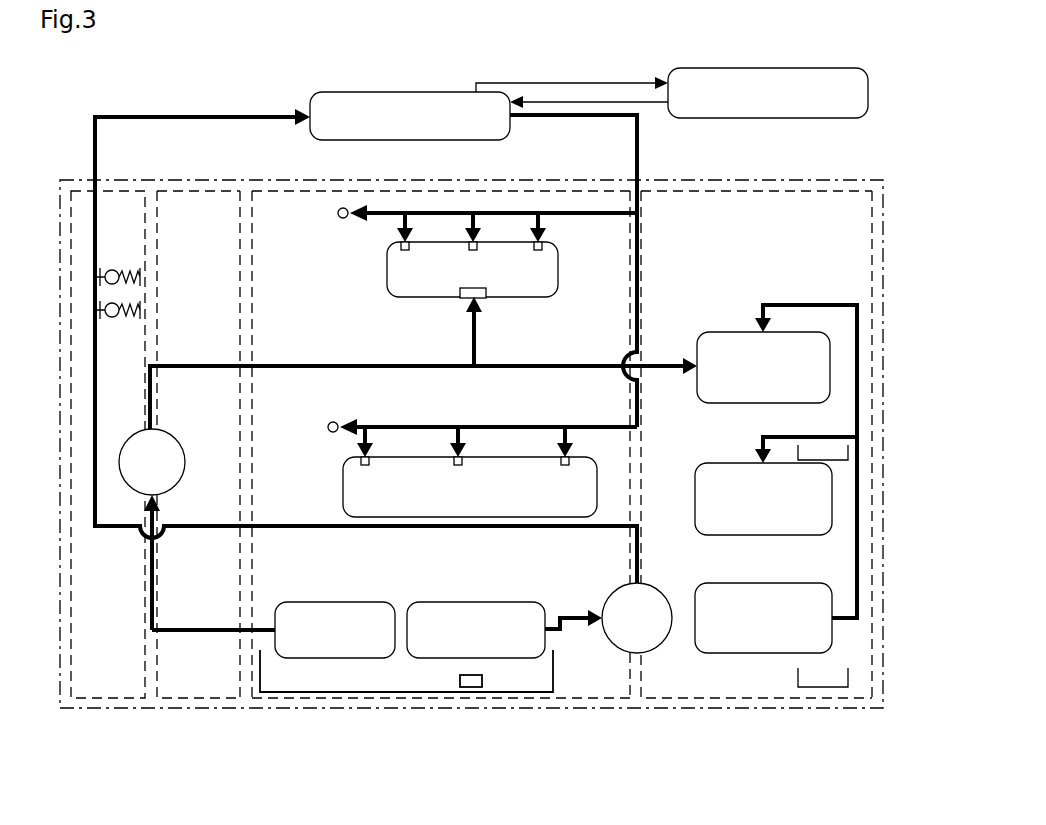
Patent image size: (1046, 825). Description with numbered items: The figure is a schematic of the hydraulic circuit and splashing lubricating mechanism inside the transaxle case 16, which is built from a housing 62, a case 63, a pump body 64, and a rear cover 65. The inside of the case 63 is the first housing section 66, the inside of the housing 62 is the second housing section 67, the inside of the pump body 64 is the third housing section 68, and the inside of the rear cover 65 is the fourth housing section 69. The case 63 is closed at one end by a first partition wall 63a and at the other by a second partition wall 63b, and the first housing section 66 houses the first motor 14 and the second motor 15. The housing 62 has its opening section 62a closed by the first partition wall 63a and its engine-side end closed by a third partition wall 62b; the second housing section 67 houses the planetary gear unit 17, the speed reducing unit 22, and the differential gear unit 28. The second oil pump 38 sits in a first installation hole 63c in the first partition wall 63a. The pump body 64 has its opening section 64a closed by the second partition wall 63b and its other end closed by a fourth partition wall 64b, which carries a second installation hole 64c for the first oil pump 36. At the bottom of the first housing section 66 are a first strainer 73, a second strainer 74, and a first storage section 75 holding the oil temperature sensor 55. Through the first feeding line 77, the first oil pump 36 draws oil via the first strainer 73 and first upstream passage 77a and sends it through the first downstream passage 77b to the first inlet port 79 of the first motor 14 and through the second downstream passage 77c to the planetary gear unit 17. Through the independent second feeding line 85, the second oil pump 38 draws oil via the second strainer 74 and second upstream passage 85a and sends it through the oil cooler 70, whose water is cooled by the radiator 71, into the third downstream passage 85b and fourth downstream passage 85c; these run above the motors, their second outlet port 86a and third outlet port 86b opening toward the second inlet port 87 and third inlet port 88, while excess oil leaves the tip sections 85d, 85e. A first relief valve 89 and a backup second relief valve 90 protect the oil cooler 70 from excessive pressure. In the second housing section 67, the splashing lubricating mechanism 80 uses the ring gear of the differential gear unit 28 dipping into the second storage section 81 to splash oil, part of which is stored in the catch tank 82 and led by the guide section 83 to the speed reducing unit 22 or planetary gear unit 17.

The first motor 14 is at (552, 276).
The second motor 15 is at (345, 492).
The transaxle case 16 is at (826, 174).
The planetary gear unit 17 is at (741, 330).
The speed reducing unit 22 is at (740, 462).
The differential gear unit 28 is at (775, 582).
The first oil pump 36 is at (127, 478).
The second oil pump 38 is at (658, 587).
The oil temperature sensor 55 is at (458, 681).
The housing 62 is at (738, 712).
The opening section 62a is at (645, 193).
The third partition wall 62b is at (872, 272).
The case 63 is at (528, 712).
The first partition wall 63a is at (630, 332).
The second partition wall 63b is at (252, 272).
The first installation hole 63c is at (653, 650).
The pump body 64 is at (202, 712).
The opening section 64a is at (240, 195).
The fourth partition wall 64b is at (158, 668).
The second installation hole 64c is at (152, 425).
The rear cover 65 is at (97, 712).
The first housing section 66 is at (320, 335).
The second housing section 67 is at (777, 245).
The third housing section 68 is at (184, 296).
The fourth housing section 69 is at (95, 603).
The oil cooler 70 is at (460, 140).
The radiator 71 is at (725, 118).
The first strainer 73 is at (318, 601).
The second strainer 74 is at (487, 601).
The first storage section 75 is at (262, 675).
The first feeding line 77 is at (146, 622).
The first upstream passage 77a is at (213, 628).
The first downstream passage 77b is at (472, 336).
The second downstream passage 77c is at (665, 364).
The first inlet port 79 is at (487, 298).
The splashing lubricating mechanism 80 is at (862, 588).
The second storage section 81 is at (798, 679).
The catch tank 82 is at (812, 450).
The guide section 83 is at (857, 352).
The second feeding line 85 is at (196, 110).
The second upstream passage 85a is at (572, 622).
The third downstream passage 85b is at (452, 211).
The fourth downstream passage 85c is at (494, 426).
The tip section 85d is at (340, 208).
The tip section 85e is at (331, 422).
The second outlet port 86a is at (400, 224).
The third outlet port 86b is at (360, 440).
The second inlet port 87 is at (400, 248).
The third inlet port 88 is at (372, 465).
The first relief valve 89 is at (121, 268).
The second relief valve 90 is at (122, 320).